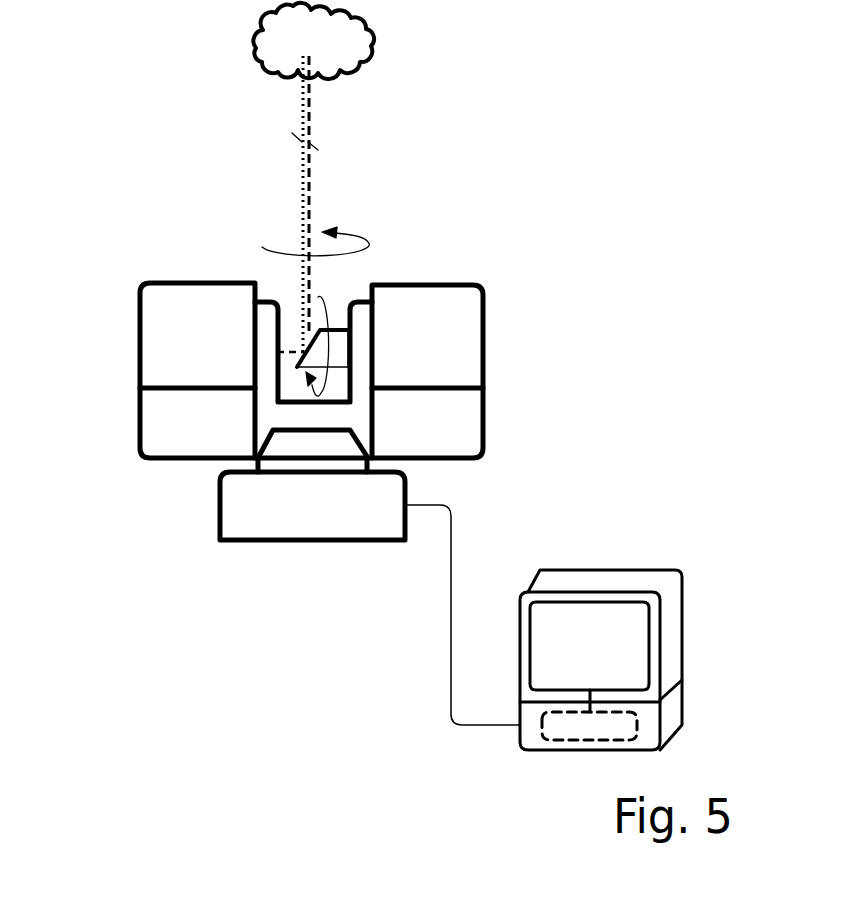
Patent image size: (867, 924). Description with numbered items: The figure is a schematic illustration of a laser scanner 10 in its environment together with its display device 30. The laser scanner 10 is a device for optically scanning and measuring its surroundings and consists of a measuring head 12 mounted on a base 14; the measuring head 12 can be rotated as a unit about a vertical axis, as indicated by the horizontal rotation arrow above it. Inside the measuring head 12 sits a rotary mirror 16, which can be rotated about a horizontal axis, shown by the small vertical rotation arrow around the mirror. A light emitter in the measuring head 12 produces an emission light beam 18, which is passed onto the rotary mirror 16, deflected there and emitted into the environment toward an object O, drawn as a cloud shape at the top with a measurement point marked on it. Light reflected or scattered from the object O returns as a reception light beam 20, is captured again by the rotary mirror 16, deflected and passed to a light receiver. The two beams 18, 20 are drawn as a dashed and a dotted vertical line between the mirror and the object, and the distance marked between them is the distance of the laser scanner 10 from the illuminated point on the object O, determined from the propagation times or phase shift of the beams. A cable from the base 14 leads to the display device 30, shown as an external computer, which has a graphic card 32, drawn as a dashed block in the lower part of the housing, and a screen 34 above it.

The object O is at (373, 43).
The laser scanner 10 is at (285, 382).
The measuring head 12 is at (156, 340).
The base 14 is at (240, 517).
The rotary mirror 16 is at (337, 351).
The emission light beam 18 is at (308, 188).
The reception light beam 20 is at (302, 102).
The display device 30 is at (653, 653).
The graphic card 32 is at (634, 731).
The screen 34 is at (630, 658).